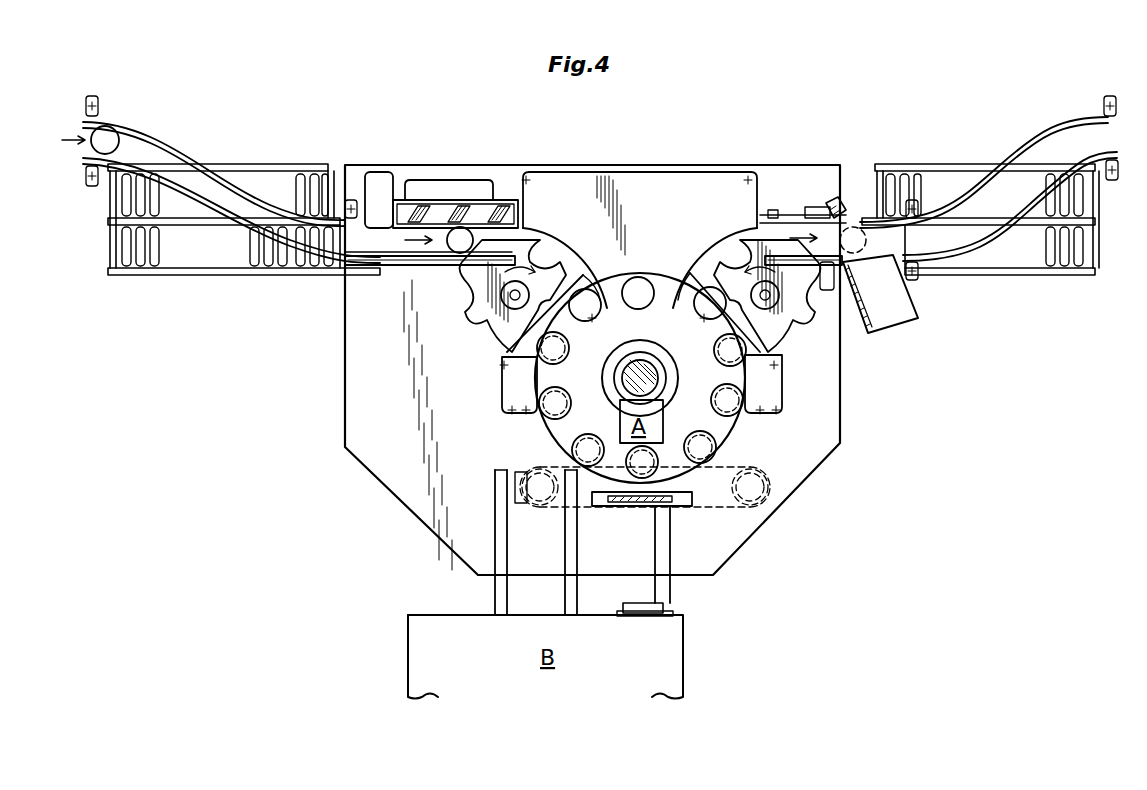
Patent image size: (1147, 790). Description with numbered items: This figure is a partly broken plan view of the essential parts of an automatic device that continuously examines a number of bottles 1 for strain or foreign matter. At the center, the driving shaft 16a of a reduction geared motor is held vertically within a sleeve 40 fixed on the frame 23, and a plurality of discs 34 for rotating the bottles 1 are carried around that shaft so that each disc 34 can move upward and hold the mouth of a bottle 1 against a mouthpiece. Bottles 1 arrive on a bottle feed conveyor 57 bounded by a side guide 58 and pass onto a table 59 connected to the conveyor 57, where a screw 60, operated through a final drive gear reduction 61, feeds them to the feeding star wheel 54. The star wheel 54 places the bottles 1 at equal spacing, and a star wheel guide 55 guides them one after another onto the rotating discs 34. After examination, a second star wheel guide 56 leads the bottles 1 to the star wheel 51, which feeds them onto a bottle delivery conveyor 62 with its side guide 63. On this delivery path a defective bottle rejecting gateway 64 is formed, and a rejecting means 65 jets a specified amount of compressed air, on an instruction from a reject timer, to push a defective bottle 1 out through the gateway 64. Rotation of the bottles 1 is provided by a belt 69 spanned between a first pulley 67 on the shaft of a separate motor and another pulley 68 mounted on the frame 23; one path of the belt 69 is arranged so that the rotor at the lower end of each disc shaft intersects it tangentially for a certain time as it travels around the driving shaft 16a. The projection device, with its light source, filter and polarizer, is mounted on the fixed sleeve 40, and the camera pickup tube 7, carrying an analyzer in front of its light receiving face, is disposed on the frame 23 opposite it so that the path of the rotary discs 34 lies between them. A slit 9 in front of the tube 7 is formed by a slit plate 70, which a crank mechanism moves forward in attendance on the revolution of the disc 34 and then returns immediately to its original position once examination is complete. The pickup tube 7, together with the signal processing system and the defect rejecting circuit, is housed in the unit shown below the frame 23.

The bottle 1 is at (108, 128).
The camera pickup tube 7 is at (632, 604).
The slit 9 is at (641, 506).
The driving shaft 16a is at (640, 362).
The frame 23 is at (437, 515).
The disc 34 is at (638, 290).
The sleeve 40 is at (612, 378).
The star wheel 51 is at (808, 318).
The star wheel 54 is at (468, 328).
The star wheel guide 55 is at (502, 384).
The star wheel guide 56 is at (777, 382).
The bottle feed conveyor 57 is at (263, 185).
The side guide 58 is at (200, 150).
The table 59 is at (380, 264).
The screw 60 is at (428, 205).
The final drive gear reduction 61 is at (378, 174).
The bottle delivery conveyor 62 is at (945, 182).
The side guide 63 is at (1030, 152).
The defective bottle rejecting gateway 64 is at (897, 322).
The rejecting means 65 is at (830, 202).
The first pulley 67 is at (692, 497).
The pulley 68 is at (532, 470).
The belt 69 is at (592, 512).
The slit plate 70 is at (678, 506).